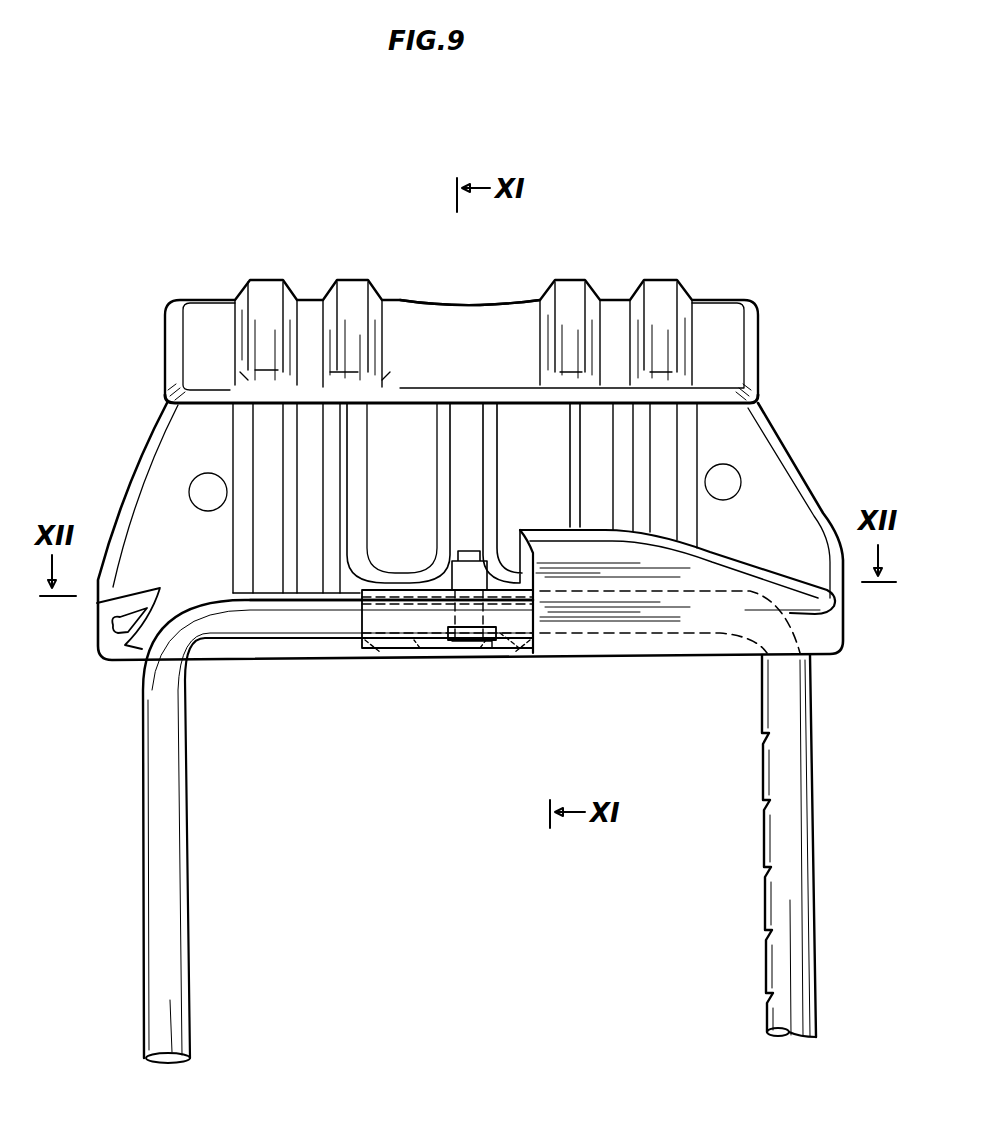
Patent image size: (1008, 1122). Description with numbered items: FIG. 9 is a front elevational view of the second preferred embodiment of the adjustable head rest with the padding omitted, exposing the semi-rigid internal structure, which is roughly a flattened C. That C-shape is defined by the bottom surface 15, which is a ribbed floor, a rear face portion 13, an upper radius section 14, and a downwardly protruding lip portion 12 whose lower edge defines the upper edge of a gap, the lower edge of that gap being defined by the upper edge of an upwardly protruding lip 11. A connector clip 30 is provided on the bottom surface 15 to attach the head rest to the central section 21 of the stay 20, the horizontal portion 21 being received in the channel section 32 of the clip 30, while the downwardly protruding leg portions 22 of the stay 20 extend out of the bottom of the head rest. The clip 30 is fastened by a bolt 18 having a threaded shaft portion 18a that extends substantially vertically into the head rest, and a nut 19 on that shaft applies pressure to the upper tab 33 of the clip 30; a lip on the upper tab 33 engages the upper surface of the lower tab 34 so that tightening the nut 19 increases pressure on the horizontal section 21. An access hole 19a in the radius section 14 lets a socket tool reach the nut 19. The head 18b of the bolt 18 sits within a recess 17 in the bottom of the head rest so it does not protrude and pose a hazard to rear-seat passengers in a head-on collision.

The upwardly protruding lip 11 is at (660, 572).
The downwardly protruding lip portion 12 is at (730, 358).
The rear face portion 13 is at (780, 478).
The upper radius section 14 is at (700, 272).
The bottom surface 15 is at (652, 658).
The recess 17 is at (446, 648).
The bolt 18 is at (470, 648).
The threaded shaft portion 18a is at (475, 565).
The bolt head 18b is at (488, 648).
The nut 19 is at (443, 578).
The access hole 19a is at (487, 303).
The stay 20 is at (203, 743).
The central section 21 is at (280, 615).
The leg portions 22 is at (170, 826).
The connector clip 30 is at (372, 648).
The channel section 32 is at (417, 618).
The upper tab 33 is at (558, 628).
The lower tab 34 is at (522, 640).